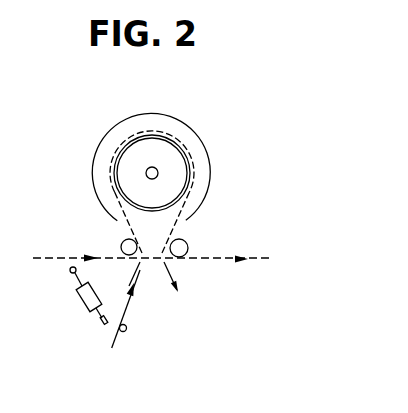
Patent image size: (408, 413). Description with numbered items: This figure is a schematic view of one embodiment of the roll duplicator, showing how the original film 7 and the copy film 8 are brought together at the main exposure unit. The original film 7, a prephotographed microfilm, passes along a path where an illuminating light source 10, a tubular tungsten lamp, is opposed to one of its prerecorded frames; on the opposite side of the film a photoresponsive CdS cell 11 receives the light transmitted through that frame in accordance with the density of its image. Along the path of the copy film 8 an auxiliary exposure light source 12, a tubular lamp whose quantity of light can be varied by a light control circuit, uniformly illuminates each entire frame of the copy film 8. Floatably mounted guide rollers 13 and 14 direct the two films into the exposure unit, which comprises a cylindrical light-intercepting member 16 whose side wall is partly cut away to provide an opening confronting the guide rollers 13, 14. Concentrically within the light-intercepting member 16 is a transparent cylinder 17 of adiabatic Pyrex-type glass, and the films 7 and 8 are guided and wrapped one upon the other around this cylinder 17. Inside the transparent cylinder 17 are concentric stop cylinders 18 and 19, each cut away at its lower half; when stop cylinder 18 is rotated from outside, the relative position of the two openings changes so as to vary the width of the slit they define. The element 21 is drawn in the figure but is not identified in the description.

The original film 7 is at (129, 291).
The copy film 8 is at (53, 255).
The illuminating light source 10 is at (127, 329).
The photoresponsive cell 11 is at (101, 323).
The auxiliary exposure light source 12 is at (69, 270).
The guide roller 13 is at (123, 241).
The guide roller 14 is at (185, 246).
The cylindrical light-intercepting member 16 is at (183, 122).
The transparent cylinder 17 is at (147, 131).
The stop cylinder 18 is at (186, 154).
The stop cylinder 19 is at (186, 193).
The lamp housing 21 is at (80, 298).